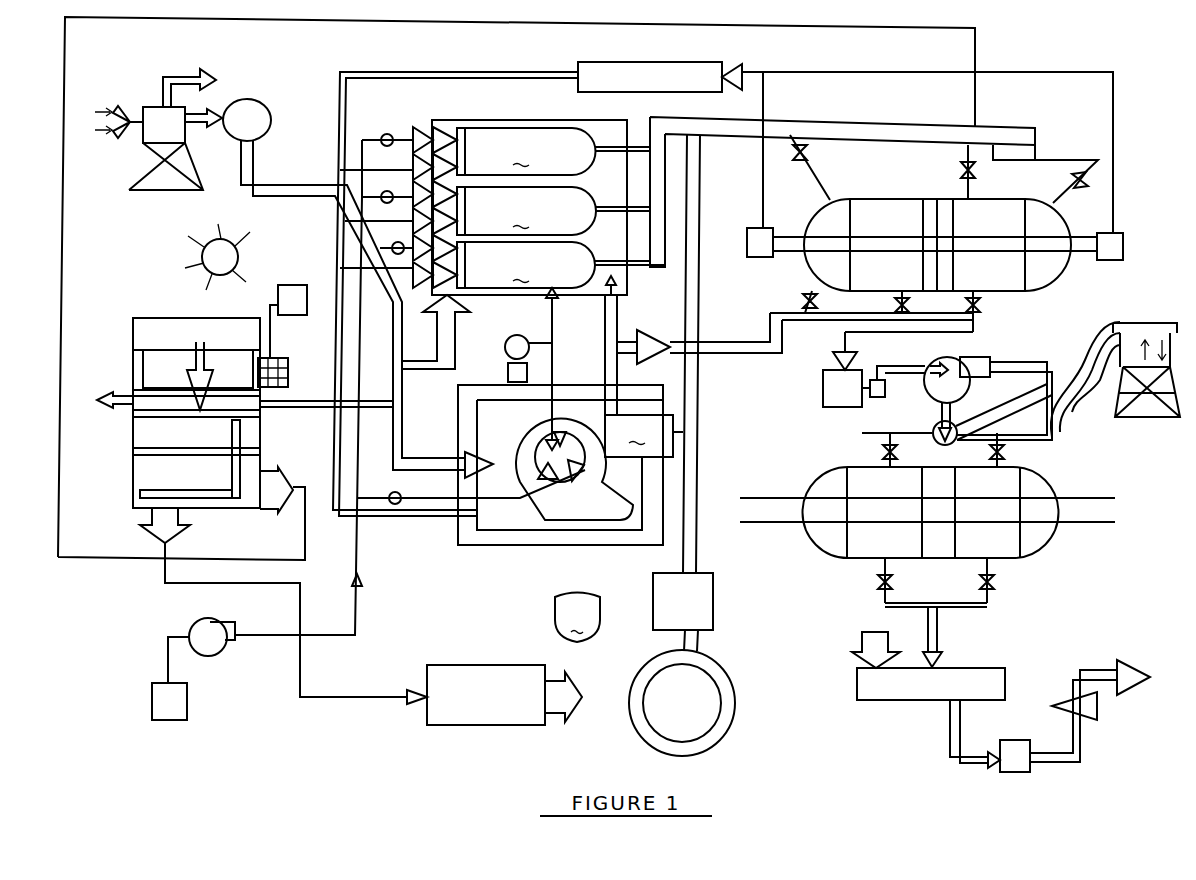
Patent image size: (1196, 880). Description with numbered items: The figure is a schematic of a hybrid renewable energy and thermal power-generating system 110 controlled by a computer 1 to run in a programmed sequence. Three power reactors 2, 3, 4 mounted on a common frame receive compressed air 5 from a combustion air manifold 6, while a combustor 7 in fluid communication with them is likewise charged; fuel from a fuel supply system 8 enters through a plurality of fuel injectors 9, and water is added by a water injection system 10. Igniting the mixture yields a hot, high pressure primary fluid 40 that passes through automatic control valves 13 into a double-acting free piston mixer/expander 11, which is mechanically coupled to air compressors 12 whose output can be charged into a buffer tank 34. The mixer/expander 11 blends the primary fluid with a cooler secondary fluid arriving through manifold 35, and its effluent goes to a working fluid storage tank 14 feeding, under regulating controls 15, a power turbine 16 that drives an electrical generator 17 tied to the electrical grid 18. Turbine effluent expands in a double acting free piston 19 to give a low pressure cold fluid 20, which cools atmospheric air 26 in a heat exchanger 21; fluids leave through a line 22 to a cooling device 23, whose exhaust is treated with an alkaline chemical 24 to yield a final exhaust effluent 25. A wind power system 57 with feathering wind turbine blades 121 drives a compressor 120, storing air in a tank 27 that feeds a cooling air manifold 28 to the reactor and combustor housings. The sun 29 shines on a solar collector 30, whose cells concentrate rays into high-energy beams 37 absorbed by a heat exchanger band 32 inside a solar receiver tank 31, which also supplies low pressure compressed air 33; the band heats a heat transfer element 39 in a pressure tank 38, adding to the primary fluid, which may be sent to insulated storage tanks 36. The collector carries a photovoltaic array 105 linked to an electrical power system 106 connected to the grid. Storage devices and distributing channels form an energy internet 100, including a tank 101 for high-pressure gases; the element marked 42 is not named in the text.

The computer 1 is at (577, 618).
The power reactor 2 is at (553, 151).
The power reactor 3 is at (553, 211).
The power reactor 4 is at (561, 265).
The compressed air 5 is at (395, 168).
The combustion air manifold 6 is at (510, 78).
The combustor 7 is at (570, 410).
The fuel supply system 8 is at (188, 702).
The fuel injectors 9 is at (388, 134).
The water injection system 10 is at (510, 340).
The mixer/expander 11 is at (920, 199).
The air compressors 12 is at (750, 258).
The automatic control valves 13 is at (808, 152).
The working fluid storage tank 14 is at (823, 392).
The regulating controls 15 is at (870, 395).
The power turbine 16 is at (936, 362).
The electrical generator 17 is at (936, 442).
The electrical grid 18 is at (1128, 322).
The double acting free piston 19 is at (1050, 475).
The low pressure cold fluid 20 is at (938, 632).
The heat exchanger 21 is at (858, 700).
The line 22 is at (948, 735).
The cooling device 23 is at (1032, 740).
The alkaline chemical 24 is at (1097, 712).
The final exhaust effluent 25 is at (1130, 663).
The atmospheric air 26 is at (864, 632).
The tank 27 is at (228, 120).
The cooling air manifold 28 is at (282, 197).
The sun 29 is at (202, 250).
The solar collector 30 is at (195, 412).
The solar receiver tank 31 is at (262, 408).
The heat exchanger band 32 is at (150, 420).
The low pressure compressed air 33 is at (133, 380).
The buffer tank 34 is at (578, 92).
The manifold 35 is at (760, 354).
The storage tanks 36 is at (440, 665).
The high-energy beams 37 is at (190, 378).
The pressure tank 38 is at (133, 482).
The heat transfer element 39 is at (194, 490).
The primary fluid 40 is at (283, 478).
The inlet pipe 42 is at (143, 354).
The wind power system 57 is at (166, 94).
The energy internet 100 is at (735, 703).
The tank 101 is at (713, 622).
The photovoltaic array 105 is at (290, 360).
The electrical power system 106 is at (294, 285).
The power-generating system 110 is at (368, 758).
The compressor 120 is at (149, 148).
The wind turbine blades 121 is at (122, 142).